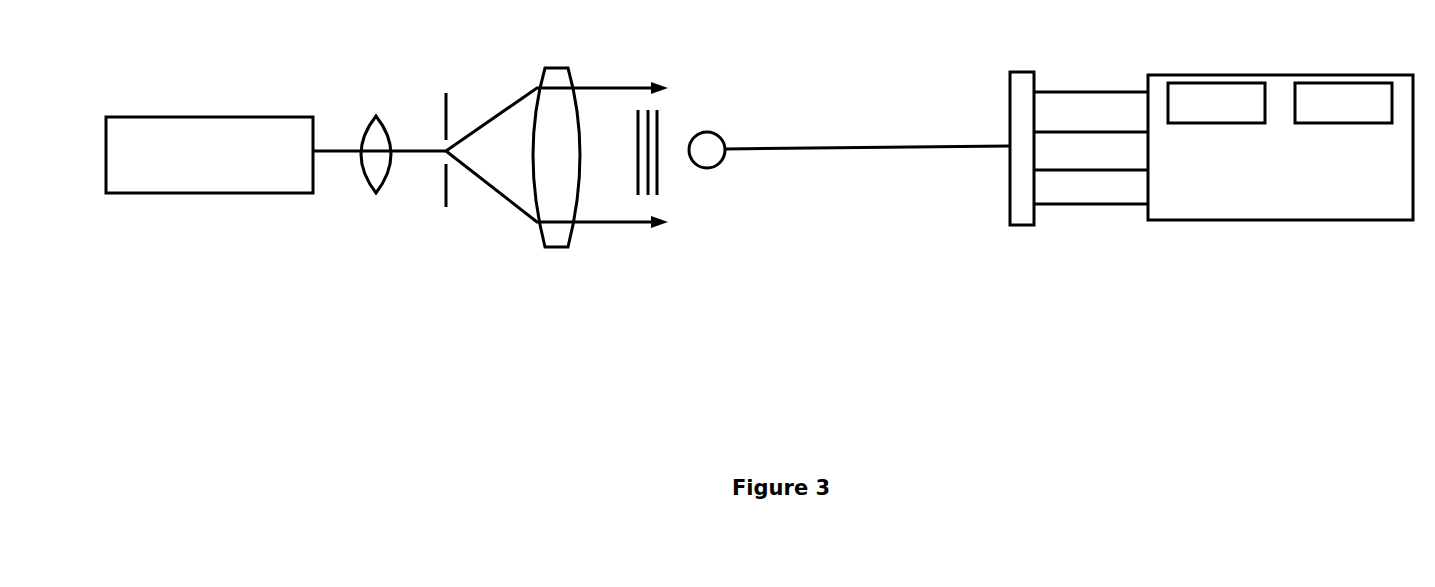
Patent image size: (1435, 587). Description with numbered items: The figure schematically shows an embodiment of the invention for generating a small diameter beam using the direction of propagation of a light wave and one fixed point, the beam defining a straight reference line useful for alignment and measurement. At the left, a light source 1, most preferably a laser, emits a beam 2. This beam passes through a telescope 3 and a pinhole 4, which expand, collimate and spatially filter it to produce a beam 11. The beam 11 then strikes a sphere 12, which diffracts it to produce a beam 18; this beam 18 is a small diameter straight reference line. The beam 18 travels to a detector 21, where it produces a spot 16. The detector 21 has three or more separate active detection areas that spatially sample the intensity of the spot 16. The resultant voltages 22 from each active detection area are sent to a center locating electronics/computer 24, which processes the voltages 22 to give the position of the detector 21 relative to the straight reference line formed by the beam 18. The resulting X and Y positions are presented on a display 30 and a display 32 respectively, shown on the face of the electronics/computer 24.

The light source 1 is at (178, 117).
The beam 2 is at (335, 150).
The telescope 3 is at (540, 238).
The pinhole 4 is at (450, 112).
The beam 11 is at (603, 88).
The sphere 12 is at (705, 132).
The spot 16 is at (1010, 145).
The beam 18 is at (825, 145).
The detector 21 is at (1022, 72).
The voltages 22 is at (1063, 217).
The center locating electronics/computer 24 is at (1268, 75).
The display 30 is at (1177, 83).
The display 32 is at (1337, 83).